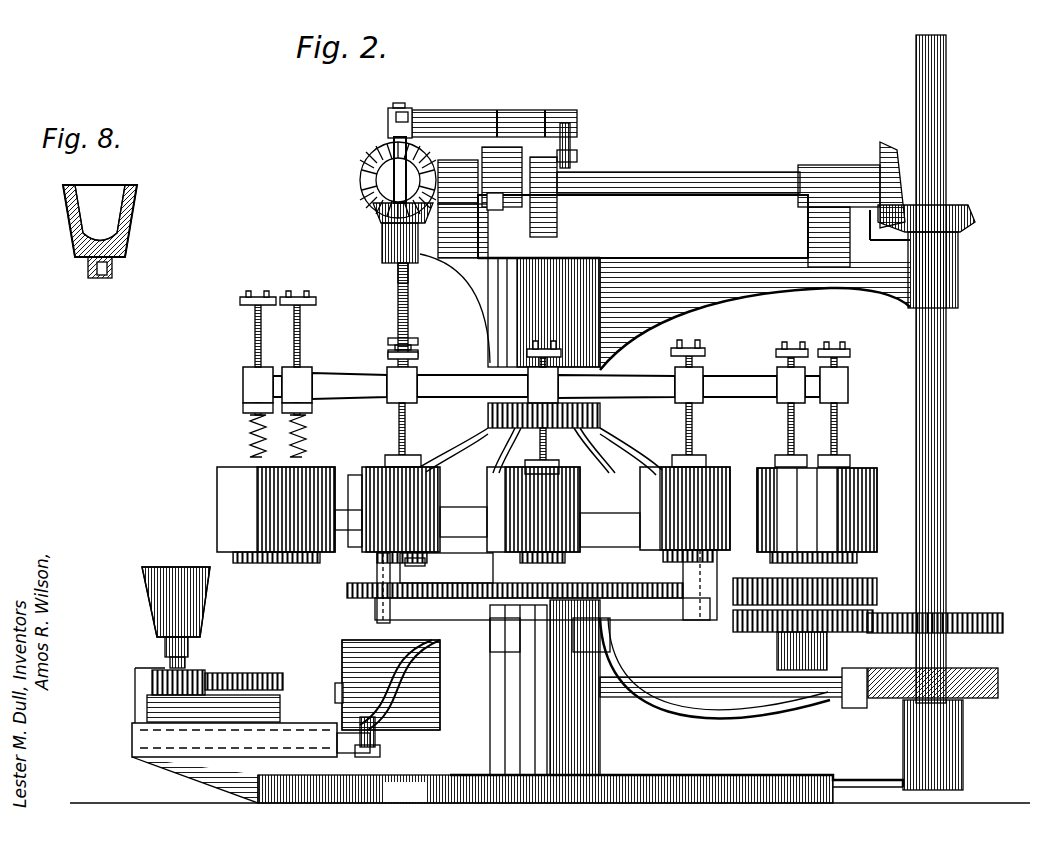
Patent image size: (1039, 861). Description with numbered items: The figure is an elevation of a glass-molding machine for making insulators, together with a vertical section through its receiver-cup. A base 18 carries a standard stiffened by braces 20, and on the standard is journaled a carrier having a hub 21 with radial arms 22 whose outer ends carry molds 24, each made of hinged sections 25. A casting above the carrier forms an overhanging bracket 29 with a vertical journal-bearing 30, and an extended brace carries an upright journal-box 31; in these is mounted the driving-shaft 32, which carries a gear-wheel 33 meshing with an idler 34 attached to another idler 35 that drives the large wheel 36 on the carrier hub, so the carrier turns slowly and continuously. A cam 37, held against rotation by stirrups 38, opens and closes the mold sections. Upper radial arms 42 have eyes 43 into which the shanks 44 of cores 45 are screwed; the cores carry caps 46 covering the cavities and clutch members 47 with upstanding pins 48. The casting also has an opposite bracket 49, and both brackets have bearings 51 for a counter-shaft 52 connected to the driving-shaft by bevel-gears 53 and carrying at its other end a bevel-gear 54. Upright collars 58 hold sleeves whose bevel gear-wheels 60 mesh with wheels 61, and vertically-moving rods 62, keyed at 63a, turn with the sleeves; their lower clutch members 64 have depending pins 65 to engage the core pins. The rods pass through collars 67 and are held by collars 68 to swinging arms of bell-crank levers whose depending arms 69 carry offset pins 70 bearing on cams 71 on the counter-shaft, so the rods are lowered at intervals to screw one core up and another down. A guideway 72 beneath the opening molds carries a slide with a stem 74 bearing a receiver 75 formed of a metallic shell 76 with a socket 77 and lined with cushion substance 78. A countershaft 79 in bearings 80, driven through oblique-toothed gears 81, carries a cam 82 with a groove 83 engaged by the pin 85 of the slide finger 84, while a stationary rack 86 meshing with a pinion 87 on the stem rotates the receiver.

In FIG. 2, the base 18 is at (550, 789).
In FIG. 2, the braces 20 is at (545, 696).
In FIG. 2, the hub 21 is at (600, 418).
In FIG. 2, the radial arms 22 is at (498, 487).
In FIG. 2, the molds 24 is at (217, 499).
In FIG. 2, the mold sections 25 is at (300, 563).
In FIG. 2, the bracket 29 is at (712, 258).
In FIG. 2, the vertical journal-bearing 30 is at (960, 288).
In FIG. 2, the upright journal-box 31 is at (963, 746).
In FIG. 2, the driving-shaft 32 is at (948, 396).
In FIG. 2, the gear-wheel 33 is at (966, 614).
In FIG. 2, the idler 34 is at (755, 635).
In FIG. 2, the idler 35 is at (877, 593).
In FIG. 2, the large wheel 36 is at (347, 592).
In FIG. 2, the cam 37 is at (478, 553).
In FIG. 2, the stirrups 38 is at (377, 577).
In FIG. 2, the radial arms 42 is at (360, 375).
In FIG. 2, the eyes 43 is at (243, 389).
In FIG. 2, the shanks 44 is at (255, 333).
In FIG. 2, the cores 45 is at (249, 437).
In FIG. 2, the caps 46 is at (243, 410).
In FIG. 2, the clutch members 47 is at (240, 301).
In FIG. 2, the upstanding pins 48 is at (249, 291).
In FIG. 2, the bracket 49 is at (462, 283).
In FIG. 2, the bearings 51 is at (850, 166).
In FIG. 2, the counter-shaft 52 is at (700, 173).
In FIG. 2, the bevel-gears 53 is at (887, 143).
In FIG. 2, the bevel-gear 54 is at (432, 155).
In FIG. 2, the upright collars 58 is at (382, 249).
In FIG. 2, the bevel gear-wheels 60 is at (373, 216).
In FIG. 2, the bevel gear-wheels 61 is at (360, 177).
In FIG. 2, the vertically-moving rods 62 is at (398, 304).
In FIG. 2, the key 63a is at (398, 281).
In FIG. 2, the clutch members 64 is at (418, 341).
In FIG. 2, the depending pins 65 is at (389, 340).
In FIG. 2, the collars 67 is at (388, 120).
In FIG. 2, the collars 68 is at (412, 118).
In FIG. 2, the arms 69 is at (572, 162).
In FIG. 2, the offset pins 70 is at (496, 212).
In FIG. 2, the cams 71 is at (560, 233).
In FIG. 2, the guideway 72 is at (132, 753).
In FIG. 2, the stem 74 is at (185, 713).
In FIG. 8, the receiver 75 is at (86, 221).
In FIG. 2, the receiver 75 is at (161, 602).
In FIG. 8, the metallic shell 76 is at (134, 226).
In FIG. 2, the metallic shell 76 is at (155, 573).
In FIG. 8, the socket 77 is at (113, 271).
In FIG. 2, the socket 77 is at (165, 648).
In FIG. 8, the non-combustible cushion substance 78 is at (120, 192).
In FIG. 2, the countershaft 79 is at (692, 677).
In FIG. 2, the bearings 80 is at (853, 671).
In FIG. 2, the oblique-toothed gears 81 is at (998, 684).
In FIG. 2, the cam 82 is at (345, 651).
In FIG. 2, the groove 83 is at (391, 685).
In FIG. 2, the finger 84 is at (376, 741).
In FIG. 2, the pin 85 is at (360, 750).
In FIG. 2, the stationary rack 86 is at (255, 676).
In FIG. 2, the pinion 87 is at (200, 676).